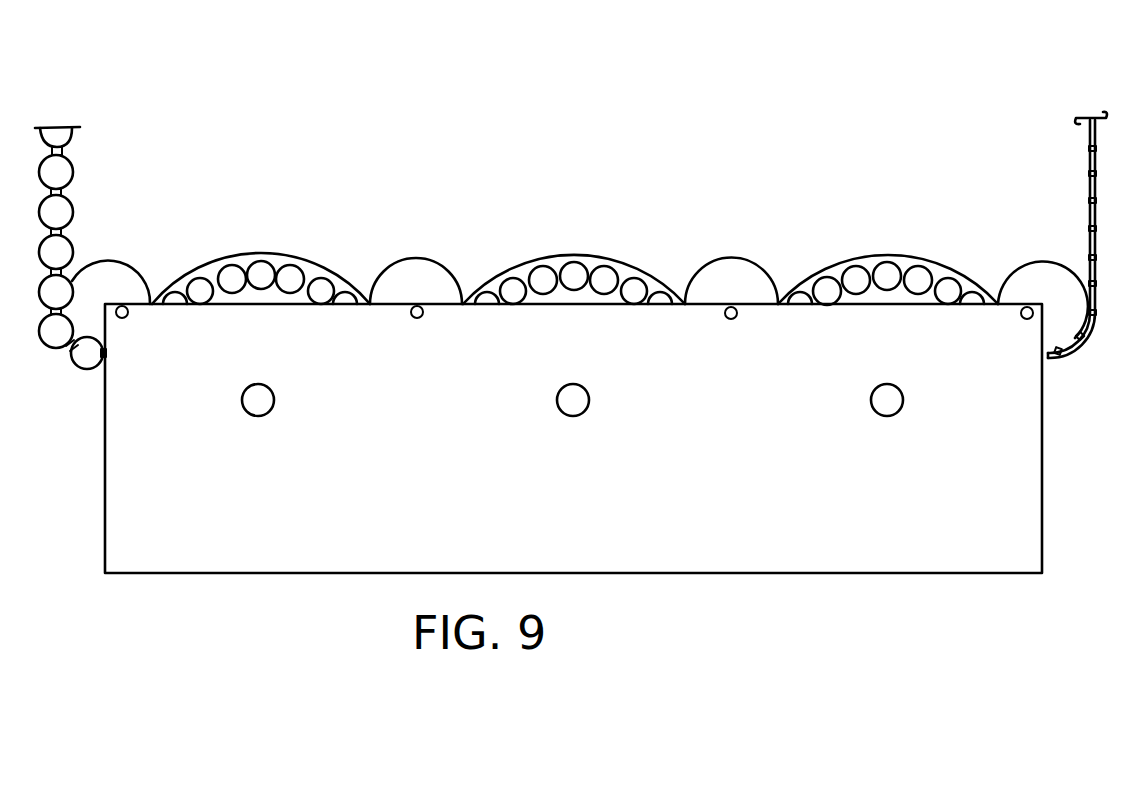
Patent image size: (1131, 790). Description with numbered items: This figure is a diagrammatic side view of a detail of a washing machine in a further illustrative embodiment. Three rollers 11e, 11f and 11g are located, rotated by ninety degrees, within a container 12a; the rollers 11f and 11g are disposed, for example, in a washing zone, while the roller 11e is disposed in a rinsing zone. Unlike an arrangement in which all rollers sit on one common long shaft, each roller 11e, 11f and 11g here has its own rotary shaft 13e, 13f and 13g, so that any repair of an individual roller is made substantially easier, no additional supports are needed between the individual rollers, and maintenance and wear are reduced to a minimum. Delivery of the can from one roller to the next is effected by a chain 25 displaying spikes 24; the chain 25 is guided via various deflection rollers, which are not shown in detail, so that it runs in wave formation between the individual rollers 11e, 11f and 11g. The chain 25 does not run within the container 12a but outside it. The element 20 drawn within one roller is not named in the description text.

The roller 11e is at (268, 253).
The roller 11f is at (573, 255).
The roller 11g is at (880, 255).
The container 12a is at (1044, 452).
The rotary shaft 13e is at (255, 415).
The rotary shaft 13f is at (560, 413).
The rotary shaft 13g is at (900, 413).
The bead 20 is at (825, 285).
The spikes 24 is at (1090, 175).
The chain 25 is at (1089, 162).